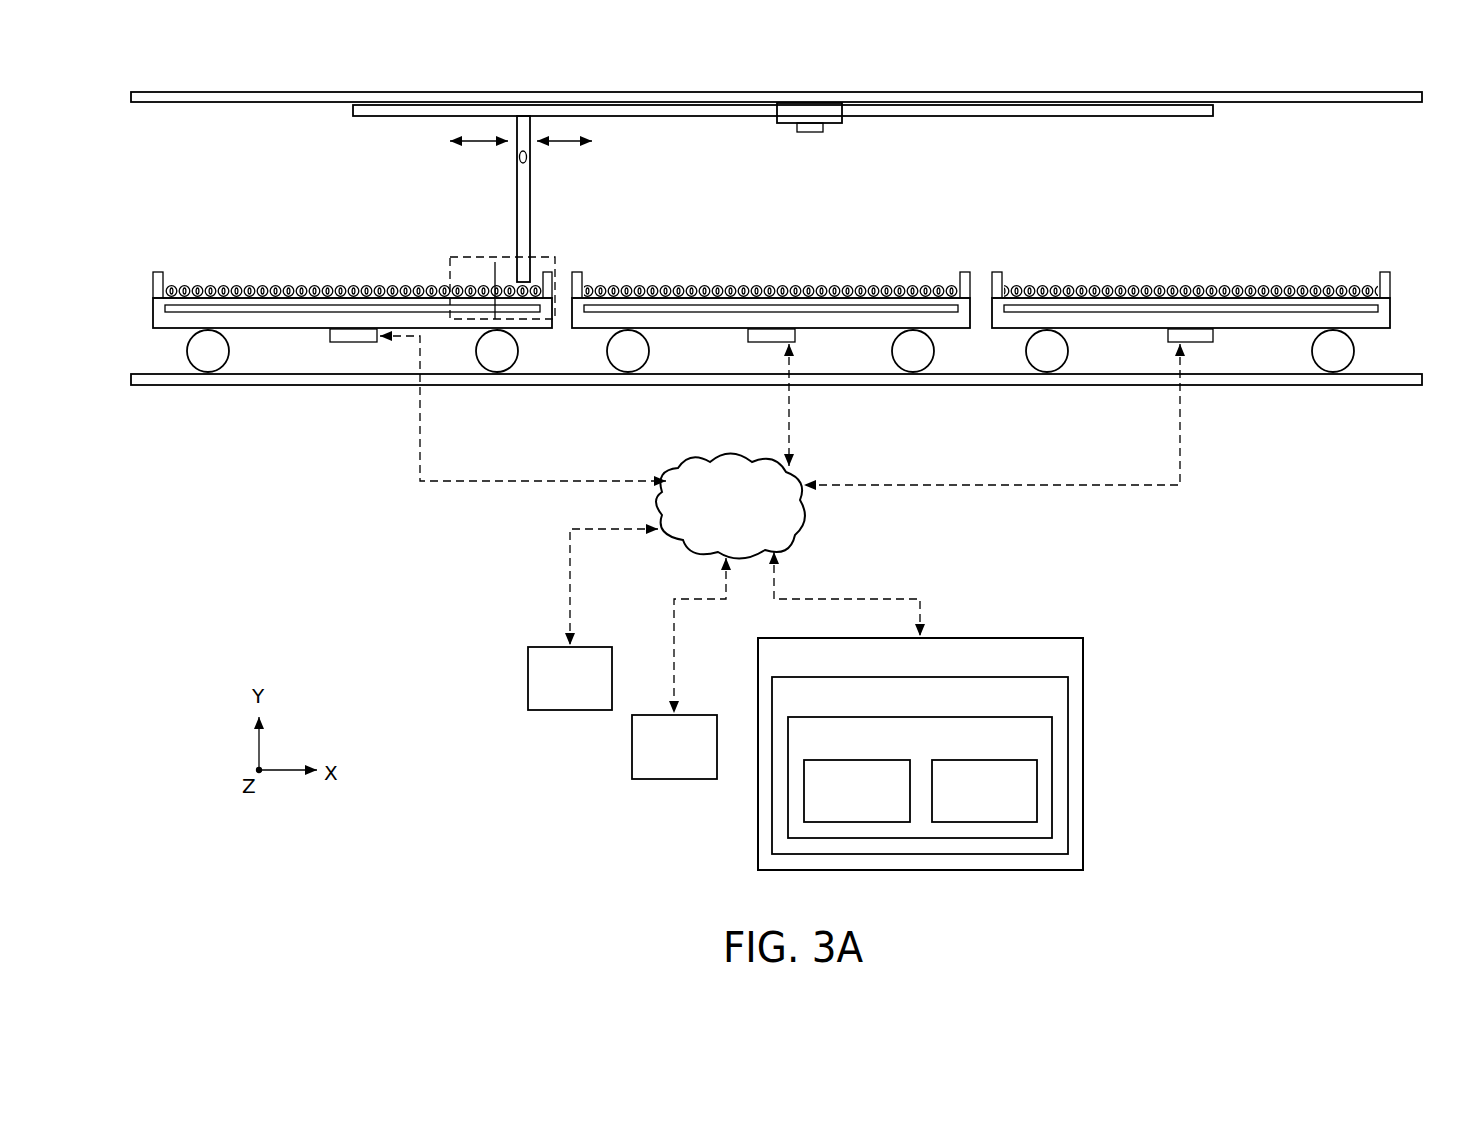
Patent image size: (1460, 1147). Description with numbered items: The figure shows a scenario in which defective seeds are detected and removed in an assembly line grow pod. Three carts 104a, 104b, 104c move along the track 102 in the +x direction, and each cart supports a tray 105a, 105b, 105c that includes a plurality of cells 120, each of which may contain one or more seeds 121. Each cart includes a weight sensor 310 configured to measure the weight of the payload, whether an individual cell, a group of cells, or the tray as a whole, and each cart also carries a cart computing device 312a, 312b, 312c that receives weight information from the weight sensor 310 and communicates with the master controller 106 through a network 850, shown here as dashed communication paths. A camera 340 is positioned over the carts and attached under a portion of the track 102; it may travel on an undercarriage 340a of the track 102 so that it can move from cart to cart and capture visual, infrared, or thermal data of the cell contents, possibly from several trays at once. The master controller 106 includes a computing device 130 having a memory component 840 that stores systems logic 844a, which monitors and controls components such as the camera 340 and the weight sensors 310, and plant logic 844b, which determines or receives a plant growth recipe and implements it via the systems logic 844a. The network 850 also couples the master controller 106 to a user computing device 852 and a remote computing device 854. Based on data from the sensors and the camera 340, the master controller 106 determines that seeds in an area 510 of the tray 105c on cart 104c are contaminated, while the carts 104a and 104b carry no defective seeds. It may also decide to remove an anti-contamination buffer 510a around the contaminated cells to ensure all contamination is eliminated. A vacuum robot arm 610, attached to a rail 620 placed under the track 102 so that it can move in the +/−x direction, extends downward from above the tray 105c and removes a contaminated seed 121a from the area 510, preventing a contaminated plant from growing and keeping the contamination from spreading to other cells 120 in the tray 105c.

The track 102 is at (776, 280).
The rail 620 is at (375, 117).
The vacuum robot arm 610 is at (517, 230).
The contaminated seed 121a is at (527, 160).
The seeds 121 is at (257, 285).
The cells 120 is at (590, 282).
The camera 340 is at (869, 134).
The undercarriage 340a is at (735, 153).
The tray 105c is at (317, 239).
The tray 105b is at (801, 239).
The tray 105a is at (1221, 239).
The cart 104c is at (326, 359).
The cart 104b is at (744, 357).
The cart 104a is at (1213, 359).
The weight sensor 310 is at (305, 316).
The cart computing device 312c is at (469, 405).
The cart computing device 312b is at (742, 397).
The cart computing device 312a is at (1037, 407).
The area 510 is at (495, 258).
The anti-contamination buffer 510a is at (450, 280).
The network 850 is at (754, 519).
The user computing device 852 is at (528, 678).
The remote computing device 854 is at (632, 750).
The master controller 106 is at (1083, 673).
The computing device 130 is at (1068, 718).
The memory component 840 is at (1052, 785).
The systems logic 844a is at (855, 822).
The plant logic 844b is at (983, 822).